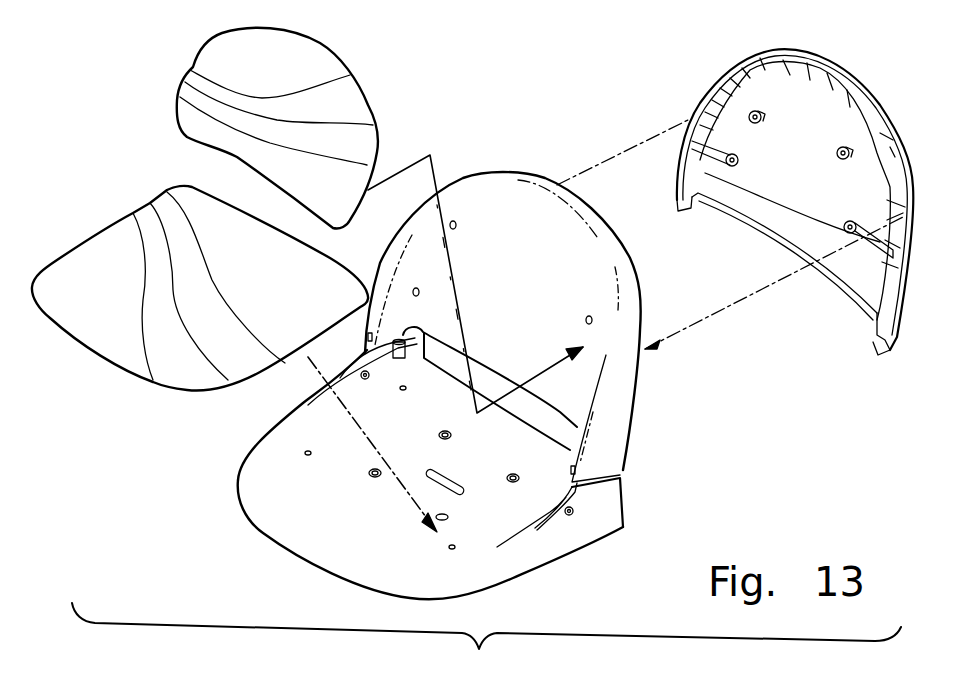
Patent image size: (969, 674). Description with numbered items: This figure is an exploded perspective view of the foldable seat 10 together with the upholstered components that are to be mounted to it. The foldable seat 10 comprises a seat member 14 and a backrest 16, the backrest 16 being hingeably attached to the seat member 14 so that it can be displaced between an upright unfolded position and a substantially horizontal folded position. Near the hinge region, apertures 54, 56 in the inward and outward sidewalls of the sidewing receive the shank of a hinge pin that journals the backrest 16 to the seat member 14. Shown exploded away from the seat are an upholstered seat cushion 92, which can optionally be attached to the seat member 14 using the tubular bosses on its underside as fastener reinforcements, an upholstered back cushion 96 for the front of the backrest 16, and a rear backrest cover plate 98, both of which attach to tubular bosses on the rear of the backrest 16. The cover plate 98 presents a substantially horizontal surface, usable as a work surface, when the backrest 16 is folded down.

The foldable seat 10 is at (471, 362).
The seat member 14 is at (342, 565).
The backrest 16 is at (524, 195).
The aperture 54 is at (367, 378).
The aperture 56 is at (580, 520).
The upholstered seat cushion 92 is at (123, 352).
The upholstered back cushion 96 is at (313, 63).
The rear backrest cover plate 98 is at (862, 105).